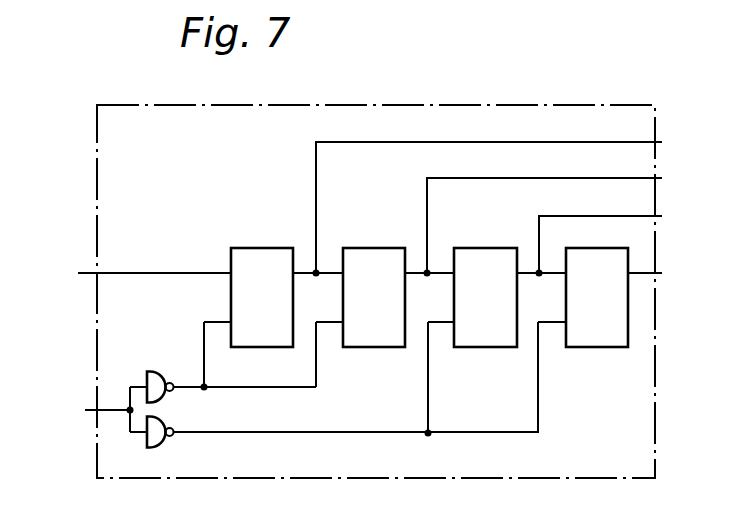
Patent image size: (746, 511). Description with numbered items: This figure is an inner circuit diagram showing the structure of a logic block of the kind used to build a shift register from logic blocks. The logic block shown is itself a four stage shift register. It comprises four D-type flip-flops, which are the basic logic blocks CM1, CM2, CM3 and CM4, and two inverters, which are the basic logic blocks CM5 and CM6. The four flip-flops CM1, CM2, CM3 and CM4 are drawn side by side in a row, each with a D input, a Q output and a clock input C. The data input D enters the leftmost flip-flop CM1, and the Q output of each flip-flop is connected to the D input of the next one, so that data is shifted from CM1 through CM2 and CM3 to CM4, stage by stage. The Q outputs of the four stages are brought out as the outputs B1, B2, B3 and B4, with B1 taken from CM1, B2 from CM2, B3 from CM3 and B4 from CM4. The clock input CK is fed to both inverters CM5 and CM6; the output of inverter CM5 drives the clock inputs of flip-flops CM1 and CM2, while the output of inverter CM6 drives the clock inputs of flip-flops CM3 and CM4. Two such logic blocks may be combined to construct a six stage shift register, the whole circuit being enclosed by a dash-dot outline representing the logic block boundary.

The basic logic block CM1 is at (259, 248).
The basic logic block CM2 is at (369, 248).
The basic logic block CM3 is at (483, 248).
The basic logic block CM4 is at (594, 348).
The basic logic block CM5 is at (150, 371).
The basic logic block CM6 is at (160, 444).
The data input D is at (142, 274).
The clock input CK is at (93, 409).
The first output B1 is at (510, 200).
The second output B2 is at (565, 218).
The third output B3 is at (621, 237).
The fourth output B4 is at (666, 274).